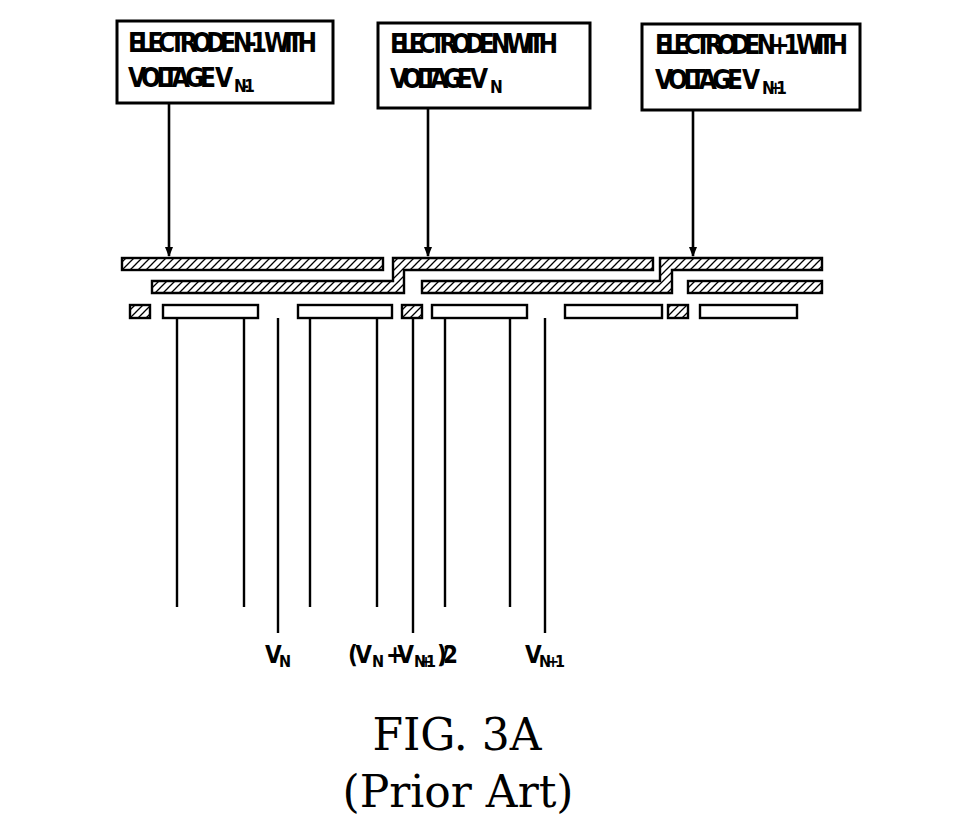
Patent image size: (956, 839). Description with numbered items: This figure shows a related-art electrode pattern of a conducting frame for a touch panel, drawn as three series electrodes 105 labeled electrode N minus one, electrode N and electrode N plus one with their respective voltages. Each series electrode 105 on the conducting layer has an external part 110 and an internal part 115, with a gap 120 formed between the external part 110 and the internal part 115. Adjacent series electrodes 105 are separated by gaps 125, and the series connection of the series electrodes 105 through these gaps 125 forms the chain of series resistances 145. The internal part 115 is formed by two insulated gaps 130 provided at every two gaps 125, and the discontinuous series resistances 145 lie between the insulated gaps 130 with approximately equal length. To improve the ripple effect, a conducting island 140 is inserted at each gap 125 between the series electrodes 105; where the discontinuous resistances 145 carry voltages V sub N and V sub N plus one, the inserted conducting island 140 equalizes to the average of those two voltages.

The series electrode 105 is at (206, 254).
The external part 110 is at (287, 257).
The internal part 115 is at (235, 281).
The gap 120 is at (336, 281).
The gap 125 is at (409, 257).
The insulated gap 130 is at (210, 320).
The conducting island 140 is at (140, 318).
The series resistance 145 is at (127, 241).